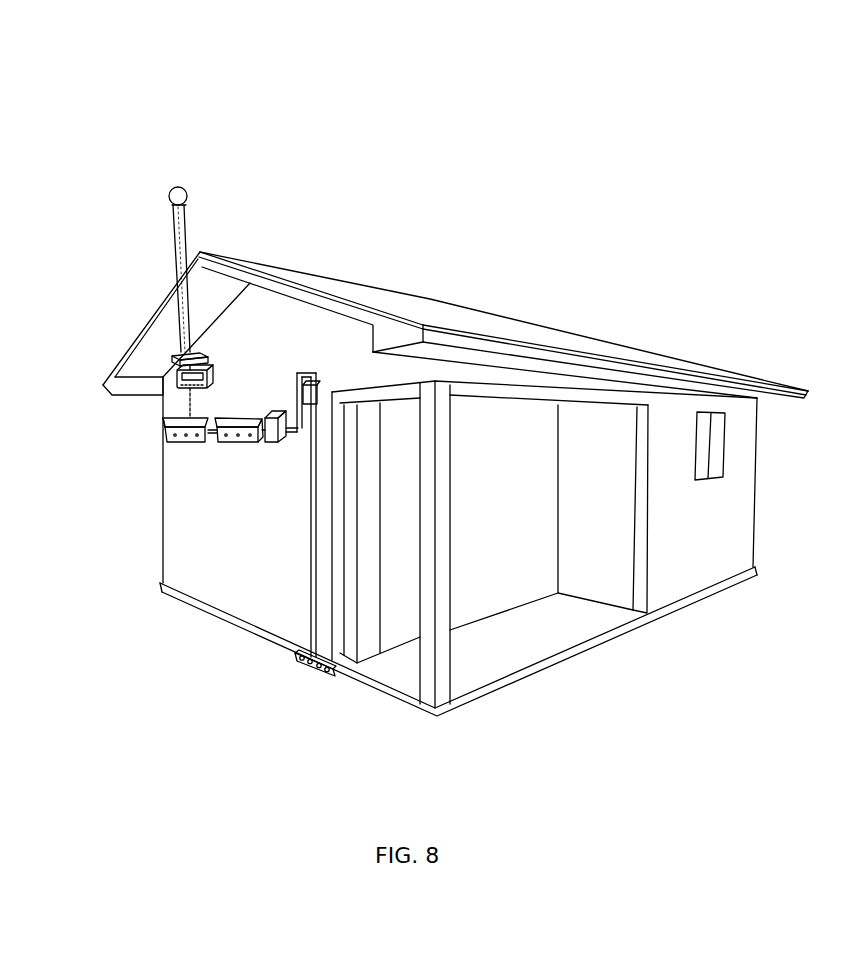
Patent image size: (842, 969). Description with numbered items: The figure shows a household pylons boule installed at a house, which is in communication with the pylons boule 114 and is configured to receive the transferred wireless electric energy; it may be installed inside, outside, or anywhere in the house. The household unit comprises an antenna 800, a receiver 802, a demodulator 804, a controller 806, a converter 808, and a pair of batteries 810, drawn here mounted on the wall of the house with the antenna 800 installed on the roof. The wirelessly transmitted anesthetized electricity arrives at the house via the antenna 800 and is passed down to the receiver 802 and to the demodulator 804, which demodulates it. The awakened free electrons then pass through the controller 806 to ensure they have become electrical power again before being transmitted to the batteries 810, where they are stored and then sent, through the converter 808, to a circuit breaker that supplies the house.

The pylons boule 114 is at (213, 130).
The antenna 800 is at (178, 241).
The receiver 802 is at (212, 369).
The demodulator 804 is at (177, 443).
The controller 806 is at (233, 445).
The converter 808 is at (282, 440).
The pair of batteries 810 is at (331, 676).